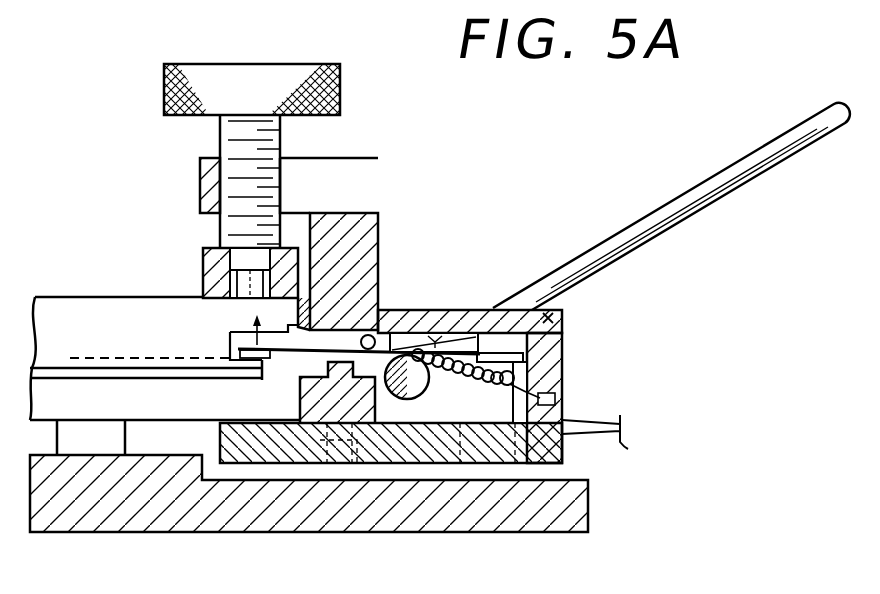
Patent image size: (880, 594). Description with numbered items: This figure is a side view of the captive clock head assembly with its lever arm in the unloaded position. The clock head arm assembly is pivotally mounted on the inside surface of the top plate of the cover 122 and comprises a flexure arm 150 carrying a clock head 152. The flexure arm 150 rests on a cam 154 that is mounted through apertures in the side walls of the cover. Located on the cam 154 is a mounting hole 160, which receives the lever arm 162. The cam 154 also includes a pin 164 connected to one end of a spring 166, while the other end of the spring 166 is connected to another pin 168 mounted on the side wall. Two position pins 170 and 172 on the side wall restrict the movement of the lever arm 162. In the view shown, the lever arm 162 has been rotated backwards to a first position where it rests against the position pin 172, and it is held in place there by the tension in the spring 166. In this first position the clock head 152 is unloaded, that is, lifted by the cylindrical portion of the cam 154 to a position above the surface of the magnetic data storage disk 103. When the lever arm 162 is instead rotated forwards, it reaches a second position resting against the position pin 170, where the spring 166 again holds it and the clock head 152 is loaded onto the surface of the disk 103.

The magnetic data storage disk 103 is at (112, 362).
The cover 122 is at (562, 346).
The flexure arm 150 is at (285, 364).
The clock head 152 is at (233, 360).
The cam 154 is at (412, 400).
The mounting hole 160 is at (432, 395).
The lever arm 162 is at (748, 186).
The pin 164 is at (402, 343).
The spring 166 is at (562, 410).
The pin 168 is at (562, 381).
The position pin 170 is at (372, 338).
The position pin 172 is at (555, 317).